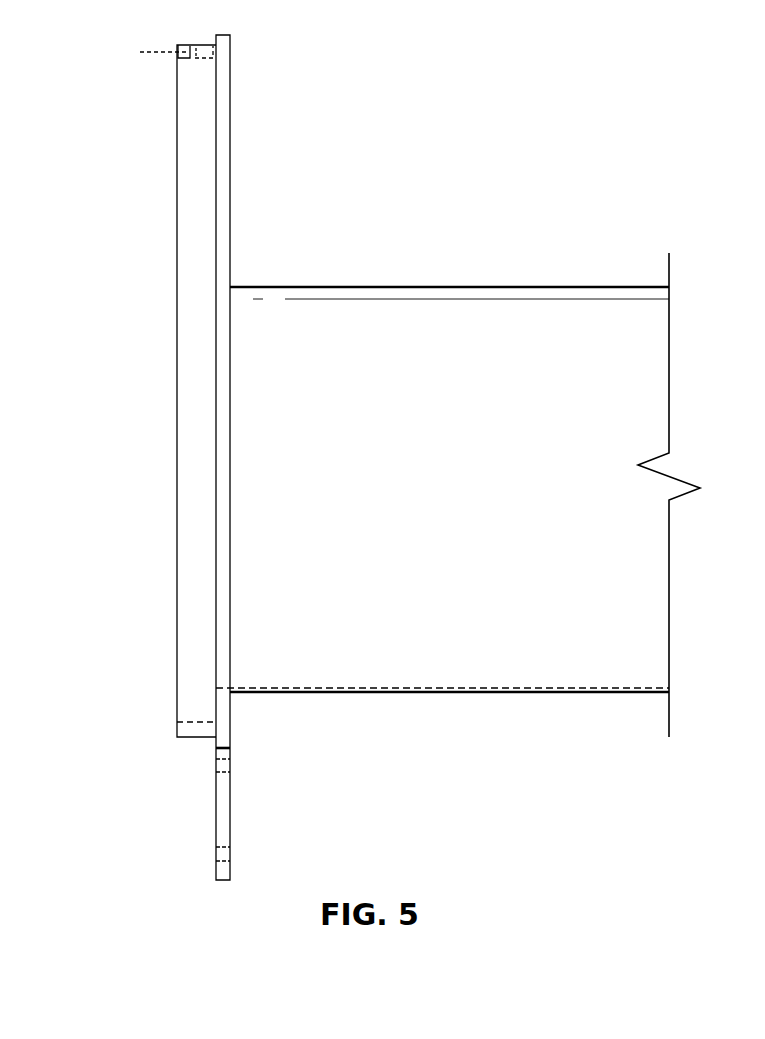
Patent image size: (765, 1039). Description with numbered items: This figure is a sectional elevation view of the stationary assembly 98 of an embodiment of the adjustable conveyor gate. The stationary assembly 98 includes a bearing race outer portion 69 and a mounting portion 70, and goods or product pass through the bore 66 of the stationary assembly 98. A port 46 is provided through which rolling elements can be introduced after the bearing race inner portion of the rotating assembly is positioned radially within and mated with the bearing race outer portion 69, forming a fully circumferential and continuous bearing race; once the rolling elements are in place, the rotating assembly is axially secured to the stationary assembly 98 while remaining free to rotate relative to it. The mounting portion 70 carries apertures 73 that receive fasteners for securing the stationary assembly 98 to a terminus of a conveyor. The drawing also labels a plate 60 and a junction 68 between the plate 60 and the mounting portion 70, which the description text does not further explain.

The stationary assembly 98 is at (108, 222).
The bore 66 is at (108, 347).
The plate 60 is at (231, 215).
The port 46 is at (172, 52).
The bearing race outer portion 69 is at (190, 49).
The weld joint 68 is at (232, 710).
The mounting portion 70 is at (222, 790).
The apertures 73 is at (220, 850).